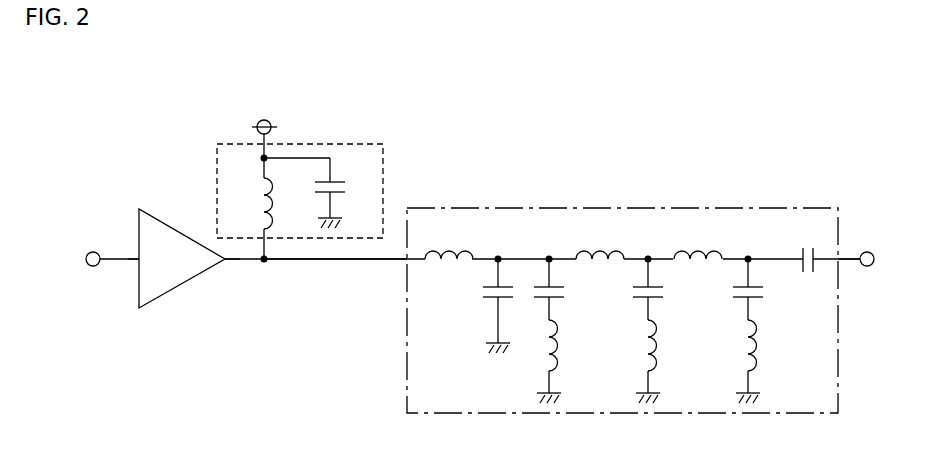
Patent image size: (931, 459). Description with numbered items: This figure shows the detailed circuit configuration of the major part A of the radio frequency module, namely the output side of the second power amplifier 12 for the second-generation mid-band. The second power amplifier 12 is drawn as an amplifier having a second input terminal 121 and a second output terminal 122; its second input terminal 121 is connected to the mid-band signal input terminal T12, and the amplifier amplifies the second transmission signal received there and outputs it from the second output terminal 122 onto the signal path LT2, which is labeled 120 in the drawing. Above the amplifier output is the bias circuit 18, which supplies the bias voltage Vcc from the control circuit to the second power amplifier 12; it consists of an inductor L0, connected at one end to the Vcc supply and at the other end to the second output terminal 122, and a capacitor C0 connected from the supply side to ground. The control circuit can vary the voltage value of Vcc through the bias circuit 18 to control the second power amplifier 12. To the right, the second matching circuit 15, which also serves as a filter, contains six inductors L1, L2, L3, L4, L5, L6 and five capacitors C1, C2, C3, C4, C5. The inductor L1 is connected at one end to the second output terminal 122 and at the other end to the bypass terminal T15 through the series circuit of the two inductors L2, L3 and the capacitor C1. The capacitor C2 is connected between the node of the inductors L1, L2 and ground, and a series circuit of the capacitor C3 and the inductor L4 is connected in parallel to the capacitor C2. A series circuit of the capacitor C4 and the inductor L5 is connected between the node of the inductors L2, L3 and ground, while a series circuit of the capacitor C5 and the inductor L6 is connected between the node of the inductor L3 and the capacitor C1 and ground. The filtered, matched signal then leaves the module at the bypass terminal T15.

The second power amplifier 12 is at (167, 233).
The second input terminal 121 is at (136, 263).
The second output terminal 122 is at (227, 262).
The bias circuit 18 is at (325, 186).
The second matching circuit 15 is at (730, 207).
The signal path / transmission line 120 is at (305, 328).
The mid-band signal input terminal T12 is at (92, 252).
The bypass terminal T15 is at (867, 252).
The signal path LT2 is at (333, 260).
The bias voltage Vcc is at (284, 136).
The inductor L0 is at (250, 208).
The capacitor C0 is at (345, 193).
The inductor L1 is at (449, 240).
The inductor L2 is at (600, 240).
The inductor L3 is at (698, 240).
The inductor L4 is at (562, 361).
The inductor L5 is at (663, 361).
The inductor L6 is at (763, 361).
The capacitor C1 is at (809, 243).
The capacitor C2 is at (484, 306).
The capacitor C3 is at (563, 289).
The capacitor C4 is at (663, 289).
The capacitor C5 is at (763, 289).
The major part A is at (717, 122).